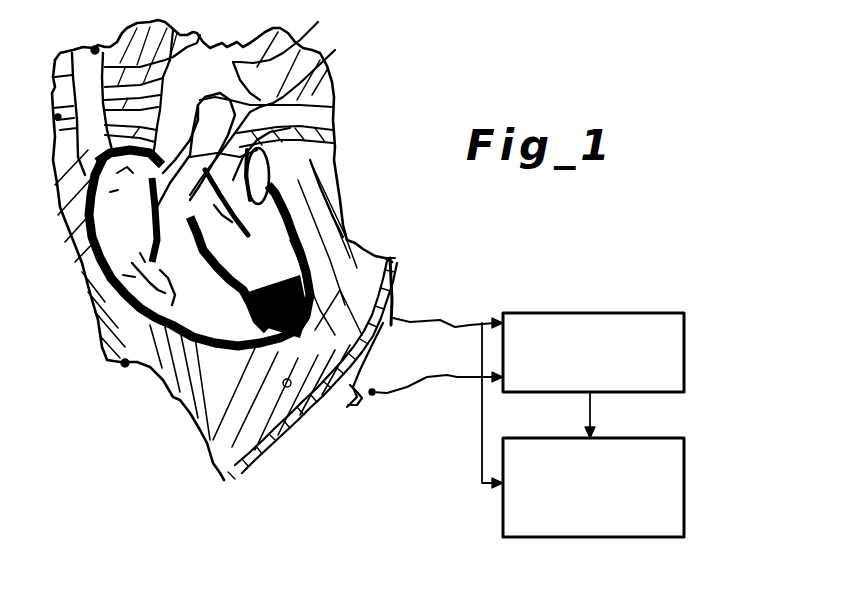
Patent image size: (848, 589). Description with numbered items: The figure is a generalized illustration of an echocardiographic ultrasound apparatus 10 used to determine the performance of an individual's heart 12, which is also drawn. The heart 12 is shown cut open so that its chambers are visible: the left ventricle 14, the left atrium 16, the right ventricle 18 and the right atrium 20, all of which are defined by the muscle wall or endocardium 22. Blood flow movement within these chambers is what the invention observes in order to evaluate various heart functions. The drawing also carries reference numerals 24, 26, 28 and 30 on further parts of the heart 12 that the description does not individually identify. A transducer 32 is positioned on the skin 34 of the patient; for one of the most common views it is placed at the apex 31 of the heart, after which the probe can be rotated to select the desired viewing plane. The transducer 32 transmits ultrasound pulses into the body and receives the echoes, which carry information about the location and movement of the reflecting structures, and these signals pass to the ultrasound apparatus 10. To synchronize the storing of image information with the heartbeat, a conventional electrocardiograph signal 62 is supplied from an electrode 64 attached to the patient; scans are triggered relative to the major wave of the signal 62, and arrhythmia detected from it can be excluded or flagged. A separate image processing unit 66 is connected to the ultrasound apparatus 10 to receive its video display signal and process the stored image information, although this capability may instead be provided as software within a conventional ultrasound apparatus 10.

The ultrasound apparatus 10 is at (593, 353).
The heart 12 is at (108, 424).
The left ventricle 14 is at (361, 283).
The left atrium 16 is at (278, 115).
The right ventricle 18 is at (202, 314).
The right atrium 20 is at (172, 263).
The muscle wall or endocardium 22 is at (301, 334).
The right ventricle 24 is at (228, 131).
The aorta 26 is at (304, 89).
The aortic valve 28 is at (277, 164).
The transducer array 30 is at (312, 239).
The apex 31 is at (416, 288).
The transducer 32 is at (377, 425).
The skin 34 is at (435, 367).
The electrocardiograph signal 62 is at (466, 298).
The electrode 64 is at (448, 378).
The image processing unit 66 is at (629, 470).